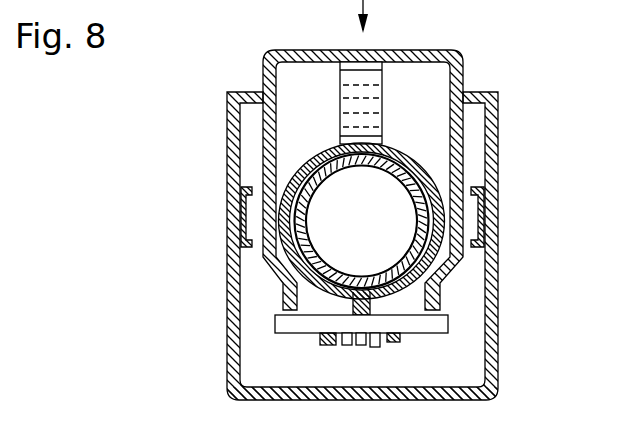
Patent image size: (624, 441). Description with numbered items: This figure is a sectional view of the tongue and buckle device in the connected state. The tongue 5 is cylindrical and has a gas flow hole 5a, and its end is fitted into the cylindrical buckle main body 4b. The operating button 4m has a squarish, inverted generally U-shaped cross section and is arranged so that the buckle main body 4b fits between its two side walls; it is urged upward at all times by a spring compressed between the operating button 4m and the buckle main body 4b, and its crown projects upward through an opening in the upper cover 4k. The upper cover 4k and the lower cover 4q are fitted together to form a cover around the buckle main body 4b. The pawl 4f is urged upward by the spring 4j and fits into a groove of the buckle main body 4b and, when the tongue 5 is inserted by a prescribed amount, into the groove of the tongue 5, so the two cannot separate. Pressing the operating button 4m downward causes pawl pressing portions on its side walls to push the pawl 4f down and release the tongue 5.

The buckle main body 4b is at (300, 162).
The pawl 4f is at (278, 320).
The spring 4j is at (340, 130).
The upper cover 4k is at (492, 130).
The operating button 4m is at (465, 55).
The lower cover 4q is at (498, 347).
The tongue 5 is at (433, 187).
The gas flow hole 5a is at (381, 244).